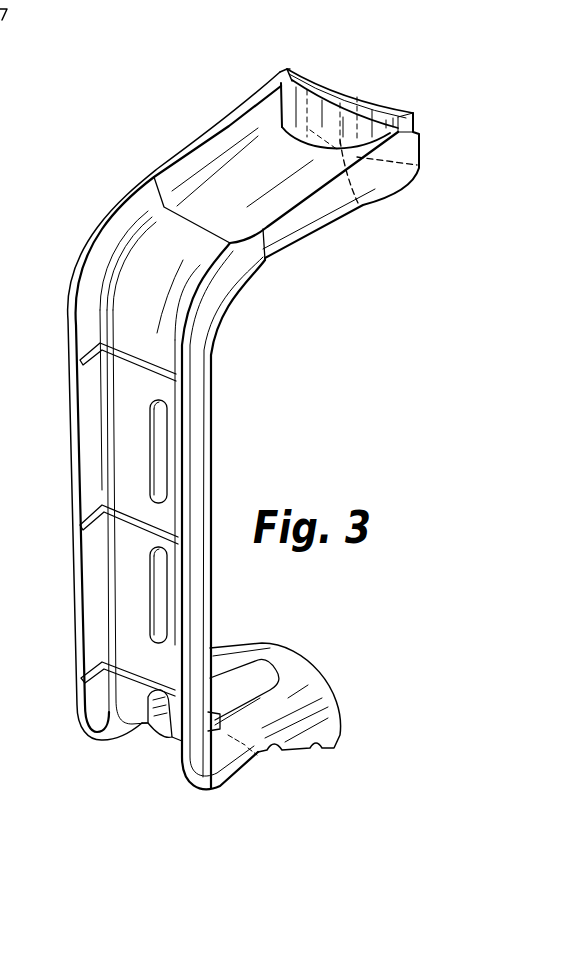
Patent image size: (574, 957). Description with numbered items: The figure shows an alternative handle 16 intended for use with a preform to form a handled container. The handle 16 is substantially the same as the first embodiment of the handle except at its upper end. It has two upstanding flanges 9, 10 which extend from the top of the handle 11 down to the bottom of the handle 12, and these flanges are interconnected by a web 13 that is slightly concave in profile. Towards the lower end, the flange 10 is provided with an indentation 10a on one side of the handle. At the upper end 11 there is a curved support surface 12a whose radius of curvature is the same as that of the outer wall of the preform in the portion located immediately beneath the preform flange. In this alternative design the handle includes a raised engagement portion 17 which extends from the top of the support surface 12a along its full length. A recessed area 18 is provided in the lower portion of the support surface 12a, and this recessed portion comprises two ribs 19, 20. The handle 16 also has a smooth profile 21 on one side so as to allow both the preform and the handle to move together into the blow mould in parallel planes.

The upstanding flange 9 is at (90, 430).
The upstanding flange 10 is at (197, 447).
The indentation 10a is at (270, 753).
The top of the handle 11 is at (192, 118).
The bottom of the handle 12 is at (152, 773).
The curved support surface 12a is at (360, 120).
The web 13 is at (130, 397).
The handle 16 is at (62, 267).
The raised engagement portion 17 is at (352, 97).
The recessed area 18 is at (420, 145).
The rib 19 is at (268, 87).
The rib 20 is at (358, 203).
The smooth profile 21 is at (298, 68).